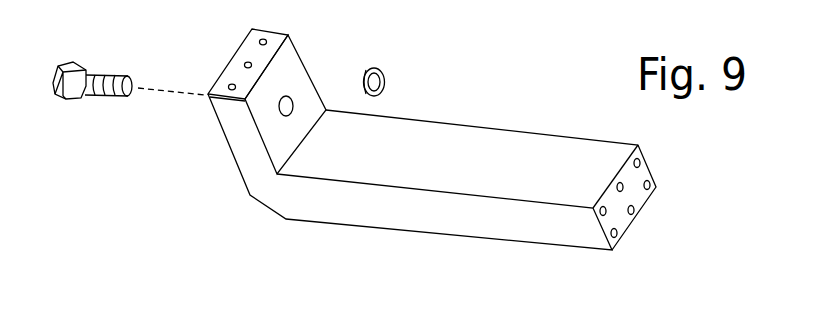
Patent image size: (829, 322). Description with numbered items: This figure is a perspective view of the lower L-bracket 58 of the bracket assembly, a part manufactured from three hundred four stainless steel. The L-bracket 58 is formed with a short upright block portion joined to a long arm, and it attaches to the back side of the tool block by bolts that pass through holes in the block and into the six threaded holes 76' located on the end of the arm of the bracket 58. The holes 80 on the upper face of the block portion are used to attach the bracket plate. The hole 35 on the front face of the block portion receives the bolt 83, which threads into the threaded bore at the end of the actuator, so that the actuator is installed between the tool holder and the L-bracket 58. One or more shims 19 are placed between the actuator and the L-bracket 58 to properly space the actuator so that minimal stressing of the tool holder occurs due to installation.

The lower L-bracket 58 is at (226, 160).
The hole 35 is at (288, 97).
The holes 80 is at (259, 42).
The threaded holes 76' is at (666, 233).
The shims 19 is at (385, 74).
The bolt 83 is at (108, 93).